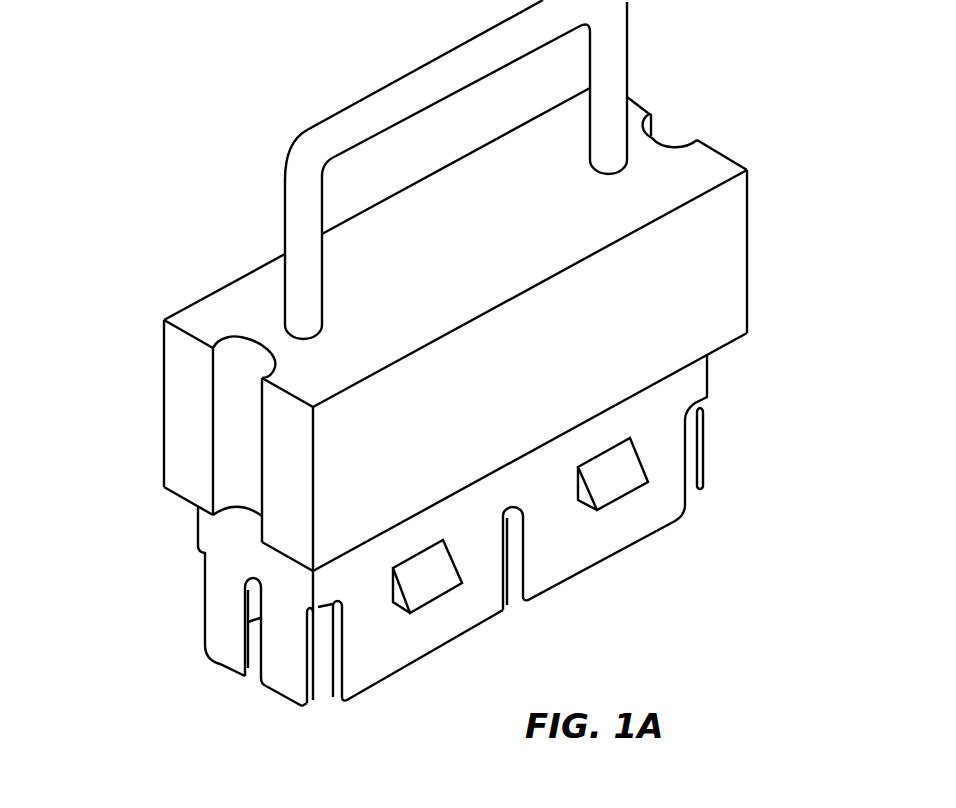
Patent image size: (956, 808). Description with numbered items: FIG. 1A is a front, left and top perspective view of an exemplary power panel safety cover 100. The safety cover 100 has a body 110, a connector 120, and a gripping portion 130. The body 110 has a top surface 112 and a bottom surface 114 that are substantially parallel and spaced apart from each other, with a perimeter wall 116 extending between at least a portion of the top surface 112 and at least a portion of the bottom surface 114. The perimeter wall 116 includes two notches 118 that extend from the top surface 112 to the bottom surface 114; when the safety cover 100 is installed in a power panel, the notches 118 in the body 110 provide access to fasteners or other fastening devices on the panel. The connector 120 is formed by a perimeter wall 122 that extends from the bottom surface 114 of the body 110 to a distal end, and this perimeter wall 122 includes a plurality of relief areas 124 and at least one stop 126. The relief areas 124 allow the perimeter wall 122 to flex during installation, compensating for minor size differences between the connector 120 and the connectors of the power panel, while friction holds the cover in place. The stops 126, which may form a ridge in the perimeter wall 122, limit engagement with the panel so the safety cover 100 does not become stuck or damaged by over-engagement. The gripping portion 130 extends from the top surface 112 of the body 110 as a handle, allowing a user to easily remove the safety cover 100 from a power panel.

The power panel safety cover 100 is at (133, 119).
The body 110 is at (133, 417).
The top surface 112 is at (680, 163).
The bottom surface 114 is at (723, 347).
The perimeter wall 116 is at (713, 240).
The notches 118 is at (229, 414).
The connector 120 is at (175, 593).
The perimeter wall 122 is at (568, 558).
The relief areas 124 is at (249, 678).
The stop 126 is at (423, 583).
The gripping portion 130 is at (300, 202).